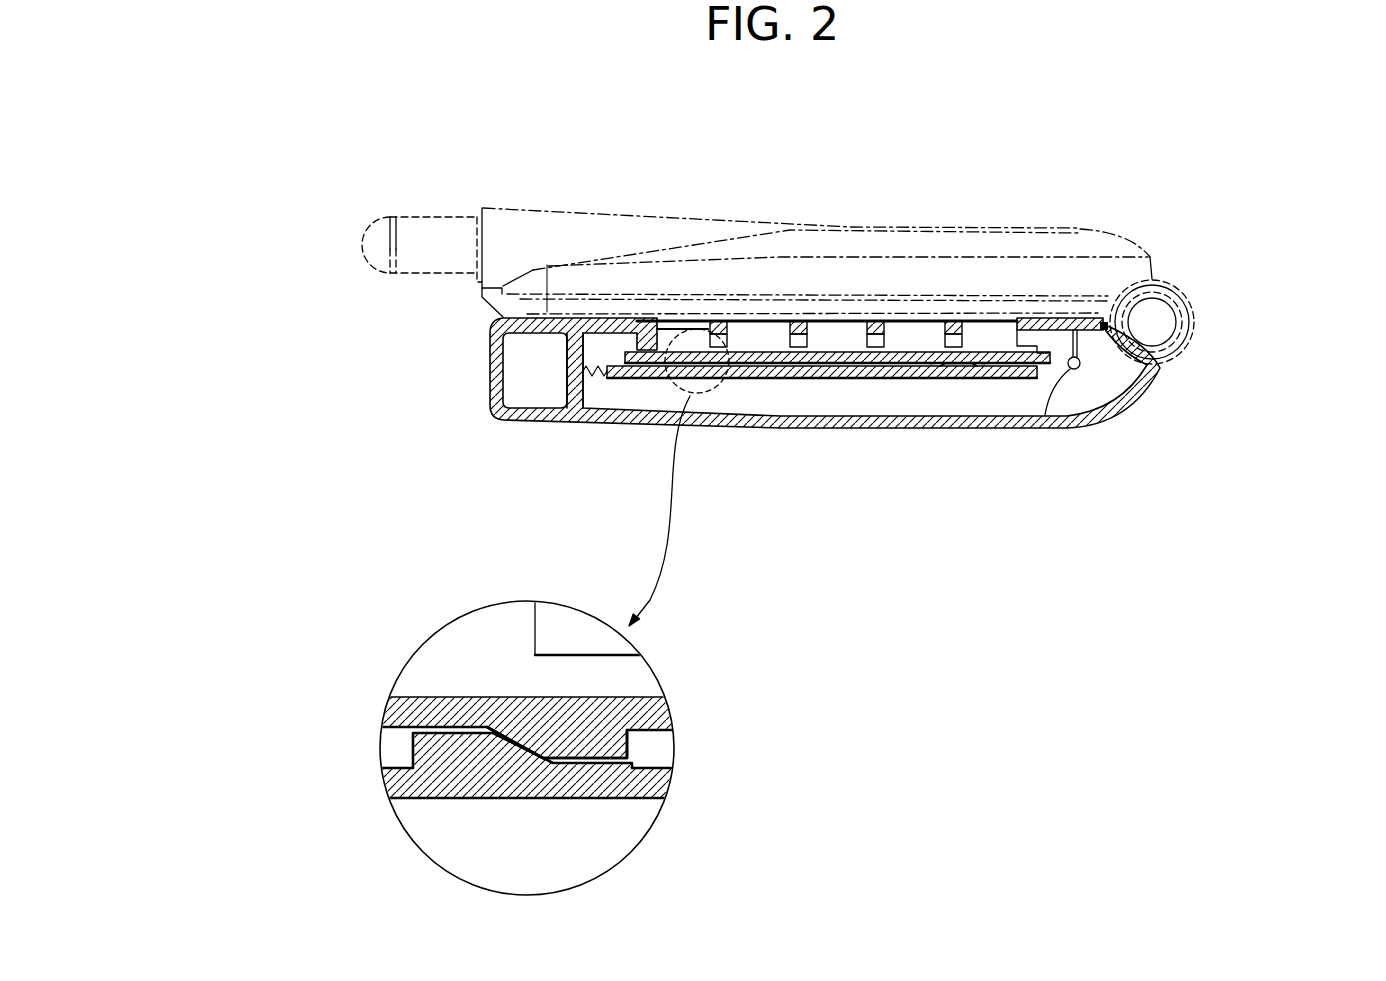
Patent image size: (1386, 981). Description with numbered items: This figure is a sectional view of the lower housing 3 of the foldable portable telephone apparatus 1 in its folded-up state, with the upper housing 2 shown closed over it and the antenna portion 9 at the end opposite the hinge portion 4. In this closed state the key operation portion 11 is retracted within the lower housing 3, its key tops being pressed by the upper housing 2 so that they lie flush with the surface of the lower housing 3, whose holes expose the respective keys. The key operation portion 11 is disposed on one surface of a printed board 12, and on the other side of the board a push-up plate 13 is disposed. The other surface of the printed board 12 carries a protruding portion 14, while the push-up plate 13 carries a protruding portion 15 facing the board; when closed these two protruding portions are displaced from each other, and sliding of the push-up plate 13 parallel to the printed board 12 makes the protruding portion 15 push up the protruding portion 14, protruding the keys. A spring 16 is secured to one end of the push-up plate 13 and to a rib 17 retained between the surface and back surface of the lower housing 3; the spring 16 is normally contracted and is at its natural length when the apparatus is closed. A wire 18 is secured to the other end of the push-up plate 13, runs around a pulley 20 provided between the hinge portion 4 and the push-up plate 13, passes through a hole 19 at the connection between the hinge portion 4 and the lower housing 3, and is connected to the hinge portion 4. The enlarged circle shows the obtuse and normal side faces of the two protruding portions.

The foldable portable telephone apparatus 1 is at (736, 477).
The upper housing 2 is at (1078, 224).
The lower housing 3 is at (486, 362).
The hinge portion 4 is at (1170, 282).
The antenna portion 9 is at (407, 224).
The key operation portion 11 is at (463, 640).
The printed board 12 is at (660, 712).
The push-up plate 13 is at (818, 374).
The protruding portion 14 is at (582, 750).
The protruding portion 15 is at (942, 368).
The spring 16 is at (592, 380).
The rib 17 is at (578, 370).
The wire 18 is at (1067, 372).
The hole 19 is at (1103, 327).
The pulley 20 is at (1082, 380).